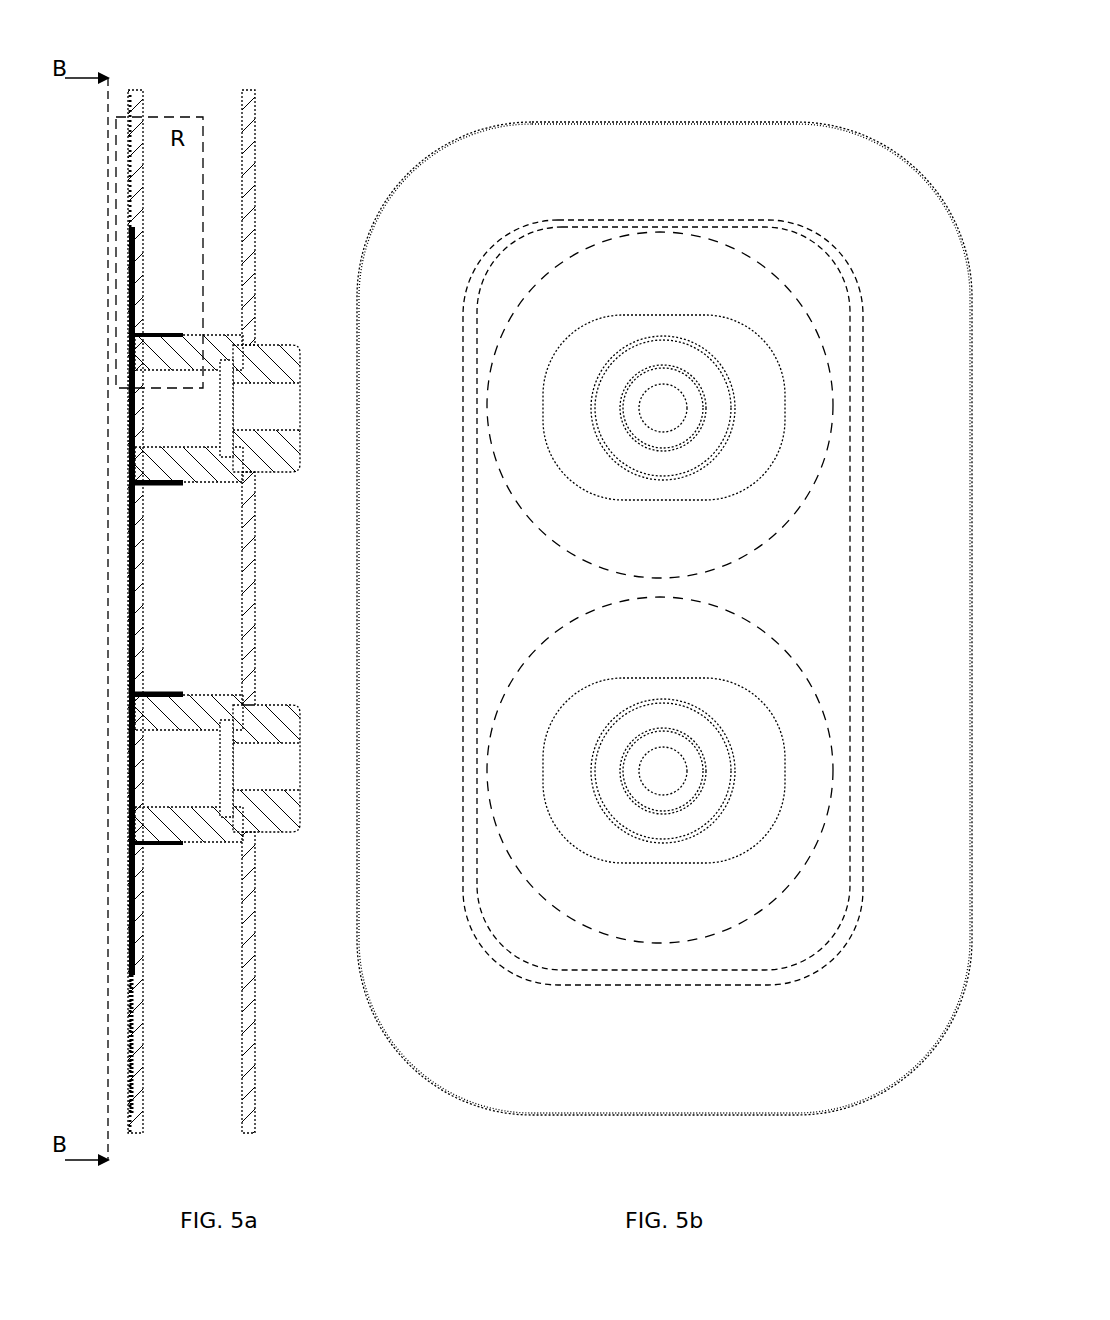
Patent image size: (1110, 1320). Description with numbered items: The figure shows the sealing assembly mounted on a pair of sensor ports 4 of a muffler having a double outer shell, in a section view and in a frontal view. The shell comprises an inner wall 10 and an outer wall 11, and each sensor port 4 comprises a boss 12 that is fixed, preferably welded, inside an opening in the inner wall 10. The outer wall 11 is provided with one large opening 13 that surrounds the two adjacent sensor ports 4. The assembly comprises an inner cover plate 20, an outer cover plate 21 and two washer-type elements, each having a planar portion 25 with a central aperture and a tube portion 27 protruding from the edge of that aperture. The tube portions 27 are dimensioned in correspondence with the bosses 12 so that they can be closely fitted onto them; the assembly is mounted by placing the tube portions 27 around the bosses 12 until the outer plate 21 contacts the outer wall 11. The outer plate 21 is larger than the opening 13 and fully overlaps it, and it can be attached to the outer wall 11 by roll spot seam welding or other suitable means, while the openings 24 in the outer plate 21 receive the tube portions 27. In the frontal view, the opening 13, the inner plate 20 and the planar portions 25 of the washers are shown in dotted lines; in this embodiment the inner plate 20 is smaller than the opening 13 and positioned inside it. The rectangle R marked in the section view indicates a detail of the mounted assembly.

In FIG. 5a, the sensor port 4 is at (280, 678).
In FIG. 5a, the inner wall 10 is at (245, 125).
In FIG. 5a, the outer wall 11 is at (137, 97).
In FIG. 5a, the boss 12 is at (270, 360).
In FIG. 5b, the boss 12 is at (665, 350).
In FIG. 5a, the opening 13 is at (137, 978).
In FIG. 5b, the opening 13 is at (810, 228).
In FIG. 5a, the inner cover plate 20 is at (132, 238).
In FIG. 5b, the inner cover plate 20 is at (765, 228).
In FIG. 5a, the outer cover plate 21 is at (128, 138).
In FIG. 5b, the outer cover plate 21 is at (652, 150).
In FIG. 5b, the opening in the outer plate 24 is at (602, 320).
In FIG. 5b, the planar portion 25 is at (790, 330).
In FIG. 5a, the tube portion 27 is at (163, 483).